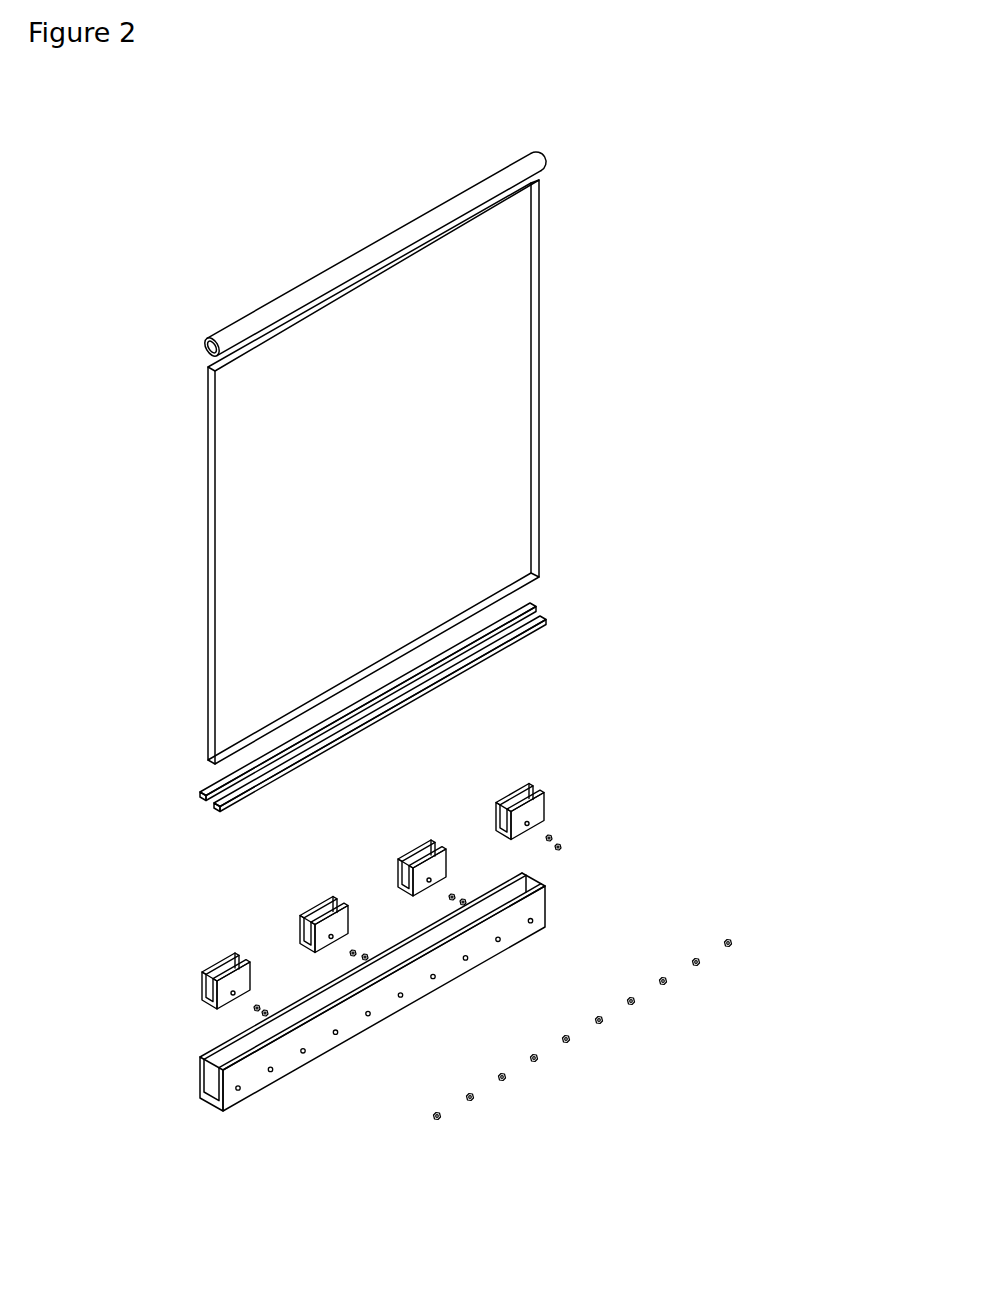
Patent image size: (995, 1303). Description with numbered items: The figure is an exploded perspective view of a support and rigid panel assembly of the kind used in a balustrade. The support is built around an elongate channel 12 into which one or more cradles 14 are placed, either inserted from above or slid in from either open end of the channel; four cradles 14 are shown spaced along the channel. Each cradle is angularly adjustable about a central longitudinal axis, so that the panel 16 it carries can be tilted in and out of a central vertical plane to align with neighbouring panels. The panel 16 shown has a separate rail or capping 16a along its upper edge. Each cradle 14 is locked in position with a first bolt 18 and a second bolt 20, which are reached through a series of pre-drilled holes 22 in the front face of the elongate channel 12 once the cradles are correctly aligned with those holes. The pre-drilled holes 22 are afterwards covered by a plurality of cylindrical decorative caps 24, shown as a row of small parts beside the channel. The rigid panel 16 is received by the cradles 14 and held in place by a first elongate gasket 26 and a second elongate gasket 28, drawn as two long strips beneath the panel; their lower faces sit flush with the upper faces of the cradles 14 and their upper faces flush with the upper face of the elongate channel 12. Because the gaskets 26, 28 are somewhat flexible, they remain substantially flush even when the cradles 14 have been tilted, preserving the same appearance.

The elongate channel 12 is at (546, 928).
The cradles 14 is at (387, 852).
The panel 16 is at (493, 478).
The rail or capping 16a is at (513, 168).
The first bolt 18 is at (567, 848).
The second bolt 20 is at (548, 833).
The pre-drilled holes 22 is at (334, 1038).
The cylindrical decorative caps 24 is at (671, 983).
The first elongate gasket 26 is at (538, 610).
The second elongate gasket 28 is at (513, 645).